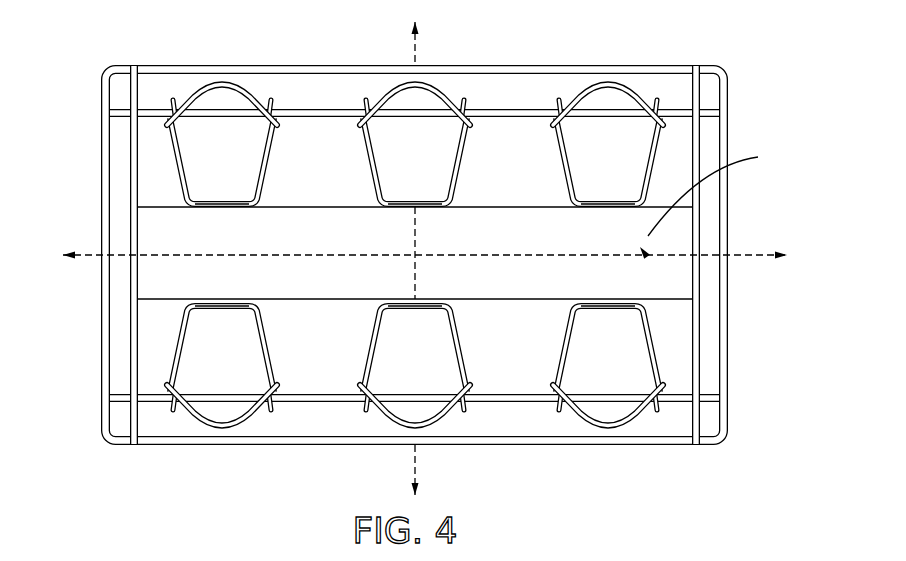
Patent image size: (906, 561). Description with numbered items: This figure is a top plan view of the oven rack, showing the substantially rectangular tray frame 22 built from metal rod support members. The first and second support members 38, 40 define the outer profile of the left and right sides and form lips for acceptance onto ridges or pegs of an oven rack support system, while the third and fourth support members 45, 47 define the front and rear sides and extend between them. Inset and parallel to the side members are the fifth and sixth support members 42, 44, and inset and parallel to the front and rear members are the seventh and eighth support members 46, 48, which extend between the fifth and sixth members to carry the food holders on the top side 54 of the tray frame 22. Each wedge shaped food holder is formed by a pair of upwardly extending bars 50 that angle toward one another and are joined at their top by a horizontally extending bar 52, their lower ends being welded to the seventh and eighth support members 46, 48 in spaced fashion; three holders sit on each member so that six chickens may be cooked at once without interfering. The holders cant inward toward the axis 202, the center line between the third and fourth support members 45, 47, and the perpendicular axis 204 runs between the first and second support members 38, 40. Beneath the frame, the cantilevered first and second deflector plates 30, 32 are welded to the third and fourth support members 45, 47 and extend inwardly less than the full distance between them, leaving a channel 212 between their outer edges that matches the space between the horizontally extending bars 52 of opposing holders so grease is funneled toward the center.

The tray frame 22 is at (75, 58).
The first deflector plate 30 is at (500, 357).
The second deflector plate 32 is at (500, 170).
The first support member 38 is at (100, 336).
The second support member 40 is at (728, 336).
The fifth support member 42 is at (130, 388).
The sixth support member 44 is at (700, 388).
The third support member 45 is at (502, 446).
The seventh support member 46 is at (668, 405).
The fourth support member 47 is at (503, 66).
The eighth support member 48 is at (662, 108).
The upwardly extending bars 50 is at (195, 165).
The horizontally extending bar 52 is at (196, 207).
The top side 54 is at (55, 167).
The axis 202 is at (756, 253).
The axis 204 is at (412, 462).
The channel 212 is at (716, 203).